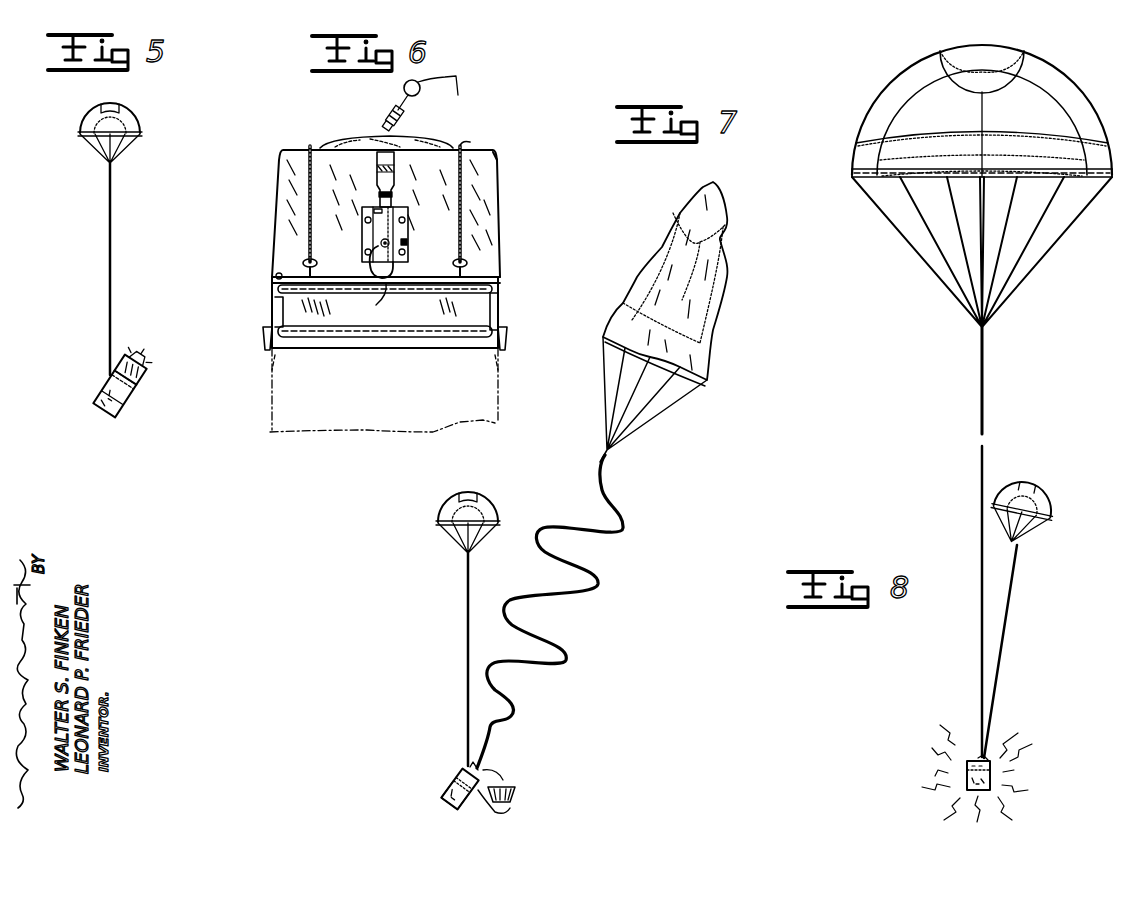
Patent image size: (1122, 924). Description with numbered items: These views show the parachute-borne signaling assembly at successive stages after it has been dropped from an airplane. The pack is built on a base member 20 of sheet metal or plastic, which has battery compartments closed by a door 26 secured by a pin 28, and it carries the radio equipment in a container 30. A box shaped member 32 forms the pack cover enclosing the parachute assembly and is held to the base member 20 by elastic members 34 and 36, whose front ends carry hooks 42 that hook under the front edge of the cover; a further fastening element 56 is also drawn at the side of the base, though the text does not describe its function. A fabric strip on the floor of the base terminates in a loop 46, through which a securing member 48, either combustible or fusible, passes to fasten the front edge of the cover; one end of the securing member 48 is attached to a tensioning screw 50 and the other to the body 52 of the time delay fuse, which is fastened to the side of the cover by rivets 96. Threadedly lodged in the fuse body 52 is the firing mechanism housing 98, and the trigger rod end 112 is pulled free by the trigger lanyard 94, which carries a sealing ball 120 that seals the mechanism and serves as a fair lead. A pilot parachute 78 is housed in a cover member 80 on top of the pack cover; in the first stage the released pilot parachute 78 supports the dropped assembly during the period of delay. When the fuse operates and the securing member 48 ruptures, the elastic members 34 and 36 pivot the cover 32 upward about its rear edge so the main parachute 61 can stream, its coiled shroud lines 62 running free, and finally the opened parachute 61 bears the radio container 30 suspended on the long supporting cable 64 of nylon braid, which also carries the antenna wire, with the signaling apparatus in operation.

In FIG. 5, the base member 20 is at (103, 378).
In FIG. 6, the base member 20 is at (501, 279).
In FIG. 7, the base member 20 is at (456, 770).
In FIG. 8, the base member 20 is at (972, 759).
In FIG. 6, the door 26 is at (465, 313).
In FIG. 6, the pin 28 is at (275, 312).
In FIG. 5, the container 30 is at (115, 420).
In FIG. 6, the container 30 is at (493, 400).
In FIG. 7, the container 30 is at (440, 787).
In FIG. 8, the container 30 is at (995, 758).
In FIG. 5, the box shaped member 32 is at (148, 381).
In FIG. 6, the box shaped member 32 is at (495, 204).
In FIG. 7, the box shaped member 32 is at (516, 797).
In FIG. 6, the elastic member 34 is at (465, 146).
In FIG. 7, the elastic member 34 is at (511, 808).
In FIG. 6, the elastic member 36 is at (302, 186).
In FIG. 6, the hooks 42 is at (304, 263).
In FIG. 6, the loop 46 is at (379, 304).
In FIG. 6, the securing member 48 is at (369, 268).
In FIG. 6, the tensioning screw 50 is at (408, 248).
In FIG. 6, the fuse body 52 is at (371, 225).
In FIG. 6, the locking pin 56 is at (262, 342).
In FIG. 7, the parachute 61 is at (703, 335).
In FIG. 8, the parachute 61 is at (1080, 92).
In FIG. 7, the shroud lines 62 is at (655, 412).
In FIG. 8, the shroud lines 62 is at (1050, 255).
In FIG. 7, the supporting cable 64 is at (518, 708).
In FIG. 8, the supporting cable 64 is at (985, 404).
In FIG. 5, the pilot parachute 78 is at (137, 122).
In FIG. 7, the pilot parachute 78 is at (485, 497).
In FIG. 8, the pilot parachute 78 is at (1052, 500).
In FIG. 5, the cover member 80 is at (141, 358).
In FIG. 6, the cover member 80 is at (419, 137).
In FIG. 6, the trigger lanyard 94 is at (451, 90).
In FIG. 6, the rivets 96 is at (405, 230).
In FIG. 6, the firing mechanism housing 98 is at (395, 196).
In FIG. 6, the trigger rod end 112 is at (385, 123).
In FIG. 6, the sealing ball 120 is at (404, 89).